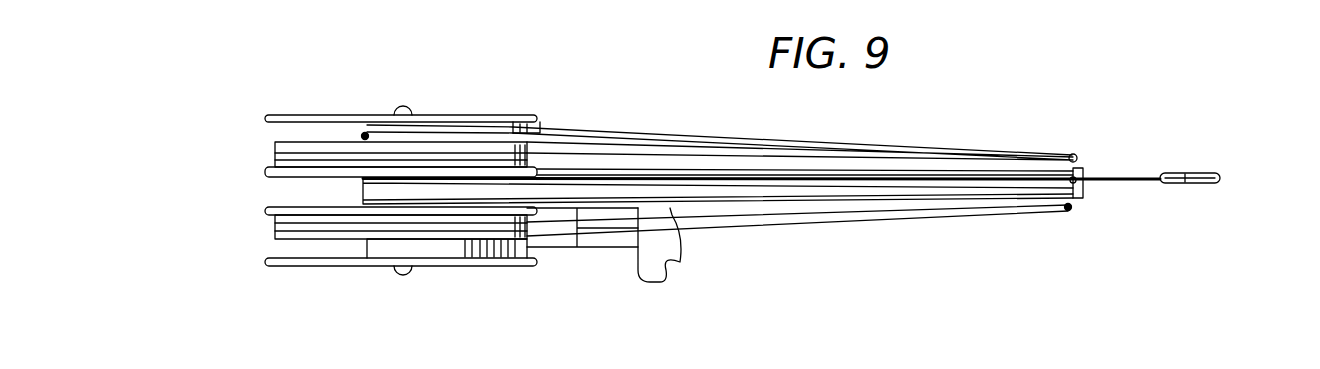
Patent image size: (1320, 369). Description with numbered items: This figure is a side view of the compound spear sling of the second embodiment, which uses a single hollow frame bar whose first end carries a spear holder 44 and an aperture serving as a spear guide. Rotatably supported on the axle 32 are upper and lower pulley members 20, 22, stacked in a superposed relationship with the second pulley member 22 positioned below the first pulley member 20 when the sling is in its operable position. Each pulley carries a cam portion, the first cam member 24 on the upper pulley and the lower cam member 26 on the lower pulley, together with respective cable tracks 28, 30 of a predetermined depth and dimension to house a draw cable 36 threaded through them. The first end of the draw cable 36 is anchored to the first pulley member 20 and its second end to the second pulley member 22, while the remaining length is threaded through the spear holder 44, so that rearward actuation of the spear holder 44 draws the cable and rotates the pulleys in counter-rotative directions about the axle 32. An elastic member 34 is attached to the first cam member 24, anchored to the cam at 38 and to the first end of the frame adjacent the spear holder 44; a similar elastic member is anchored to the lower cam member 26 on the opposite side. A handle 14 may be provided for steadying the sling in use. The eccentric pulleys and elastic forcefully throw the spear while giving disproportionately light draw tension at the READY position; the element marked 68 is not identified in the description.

The handle 14 is at (667, 270).
The first pulley member 20 is at (480, 115).
The second pulley member 22 is at (480, 260).
The first cam member 24 is at (538, 125).
The lower cam member 26 is at (437, 248).
The cable track 28 is at (275, 160).
The cable track 30 is at (350, 227).
The axle 32 is at (397, 112).
The elastic member 34 is at (648, 147).
The draw cable 36 is at (577, 210).
The anchor point 38 is at (363, 132).
The spear holder 44 is at (1200, 173).
The clip 68 is at (1083, 173).